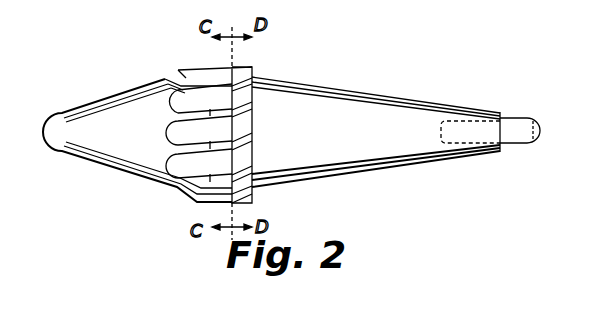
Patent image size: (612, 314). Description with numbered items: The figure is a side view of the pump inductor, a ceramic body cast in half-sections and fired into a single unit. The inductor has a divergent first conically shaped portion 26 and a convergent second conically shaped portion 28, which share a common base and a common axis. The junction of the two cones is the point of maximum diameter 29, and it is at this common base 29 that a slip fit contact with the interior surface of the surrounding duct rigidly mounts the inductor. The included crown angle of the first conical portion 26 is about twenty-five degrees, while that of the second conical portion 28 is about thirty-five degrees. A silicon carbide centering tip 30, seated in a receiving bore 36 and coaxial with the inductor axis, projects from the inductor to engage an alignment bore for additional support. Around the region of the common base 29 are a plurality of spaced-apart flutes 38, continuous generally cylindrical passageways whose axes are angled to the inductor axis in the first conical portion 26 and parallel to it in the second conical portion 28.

The divergent first conically shaped portion 26 is at (330, 103).
The convergent second conically shaped portion 28 is at (105, 107).
The point of maximum diameter 29 is at (222, 66).
The centering tip 30 is at (516, 148).
The receiving bore 36 is at (443, 166).
The flutes 38 is at (263, 78).